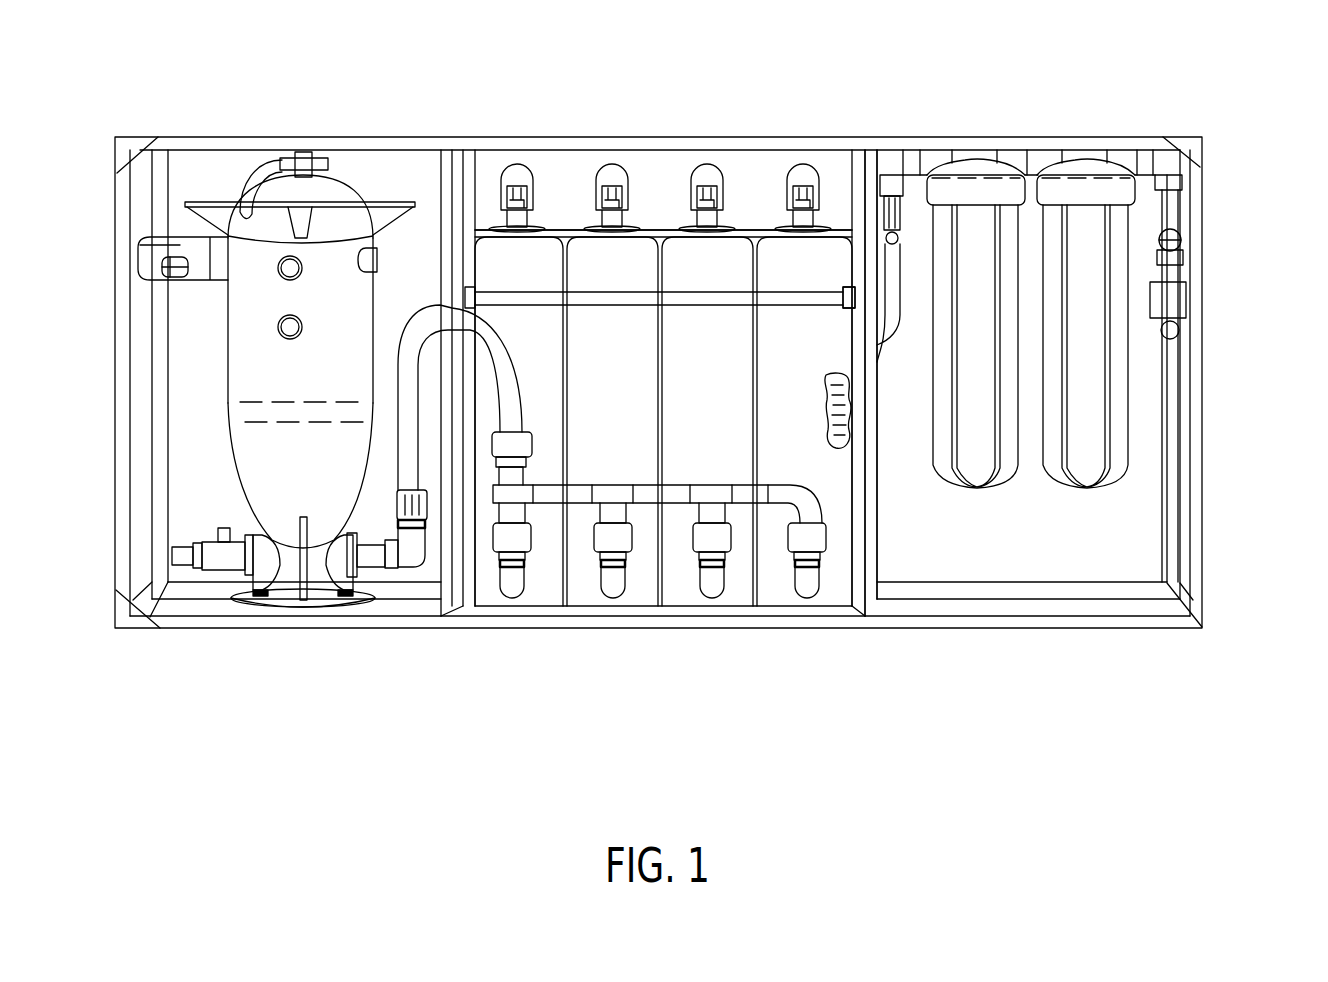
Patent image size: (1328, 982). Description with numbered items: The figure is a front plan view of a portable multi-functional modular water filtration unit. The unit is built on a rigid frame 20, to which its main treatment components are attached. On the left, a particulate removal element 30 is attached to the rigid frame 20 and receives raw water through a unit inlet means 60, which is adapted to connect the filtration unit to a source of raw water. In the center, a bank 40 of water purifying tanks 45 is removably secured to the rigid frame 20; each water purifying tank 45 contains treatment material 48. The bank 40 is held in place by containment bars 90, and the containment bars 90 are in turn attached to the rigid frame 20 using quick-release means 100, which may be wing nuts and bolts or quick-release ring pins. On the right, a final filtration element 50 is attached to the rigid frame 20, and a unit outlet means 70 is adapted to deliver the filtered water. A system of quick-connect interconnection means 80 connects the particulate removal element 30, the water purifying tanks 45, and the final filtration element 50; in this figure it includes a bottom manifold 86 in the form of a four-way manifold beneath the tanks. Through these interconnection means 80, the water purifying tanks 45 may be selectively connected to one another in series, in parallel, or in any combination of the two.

The rigid frame 20 is at (1202, 584).
The particulate removal element 30 is at (248, 425).
The bank of water purifying tanks 40 is at (438, 125).
The water purifying tank 45 is at (866, 207).
The treatment material 48 is at (822, 397).
The final filtration element 50 is at (933, 493).
The unit inlet means 60 is at (246, 180).
The unit outlet means 70 is at (1190, 313).
The system of quick-connect interconnection means 80 is at (515, 187).
The bottom manifold 86 is at (790, 507).
The containment bars 90 is at (455, 183).
The quick-release means 100 is at (817, 243).